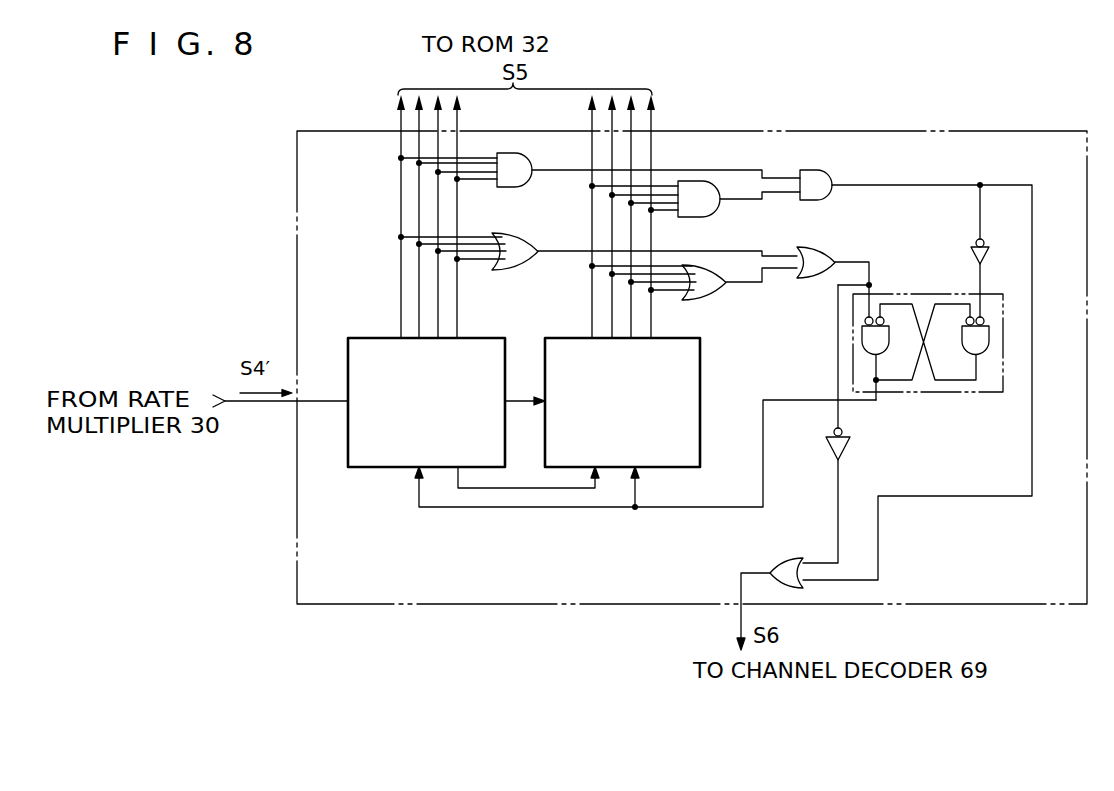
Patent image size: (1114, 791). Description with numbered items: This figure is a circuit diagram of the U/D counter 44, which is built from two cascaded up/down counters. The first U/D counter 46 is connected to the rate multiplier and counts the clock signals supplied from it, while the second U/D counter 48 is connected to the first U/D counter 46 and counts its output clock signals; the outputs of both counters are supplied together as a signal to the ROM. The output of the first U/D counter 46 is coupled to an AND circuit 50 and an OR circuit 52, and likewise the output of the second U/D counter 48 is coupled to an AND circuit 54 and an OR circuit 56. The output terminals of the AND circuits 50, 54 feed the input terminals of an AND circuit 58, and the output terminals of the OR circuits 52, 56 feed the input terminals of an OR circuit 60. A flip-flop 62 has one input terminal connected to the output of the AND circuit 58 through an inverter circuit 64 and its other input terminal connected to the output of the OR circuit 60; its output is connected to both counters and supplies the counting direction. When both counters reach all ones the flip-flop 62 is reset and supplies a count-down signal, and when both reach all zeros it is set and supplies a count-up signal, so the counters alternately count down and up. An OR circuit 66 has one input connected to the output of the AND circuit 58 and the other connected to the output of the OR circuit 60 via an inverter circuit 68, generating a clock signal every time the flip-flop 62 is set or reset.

The U/D counter 44 is at (838, 106).
The first U/D counter 46 is at (372, 470).
The second U/D counter 48 is at (700, 425).
The AND circuit 50 is at (522, 153).
The OR circuit 52 is at (519, 235).
The AND circuit 54 is at (717, 191).
The OR circuit 56 is at (716, 295).
The AND circuit 58 is at (828, 177).
The OR circuit 60 is at (831, 256).
The flip-flop 62 is at (908, 294).
The inverter circuit 64 is at (986, 245).
The OR circuit 66 is at (790, 560).
The inverter circuit 68 is at (846, 450).